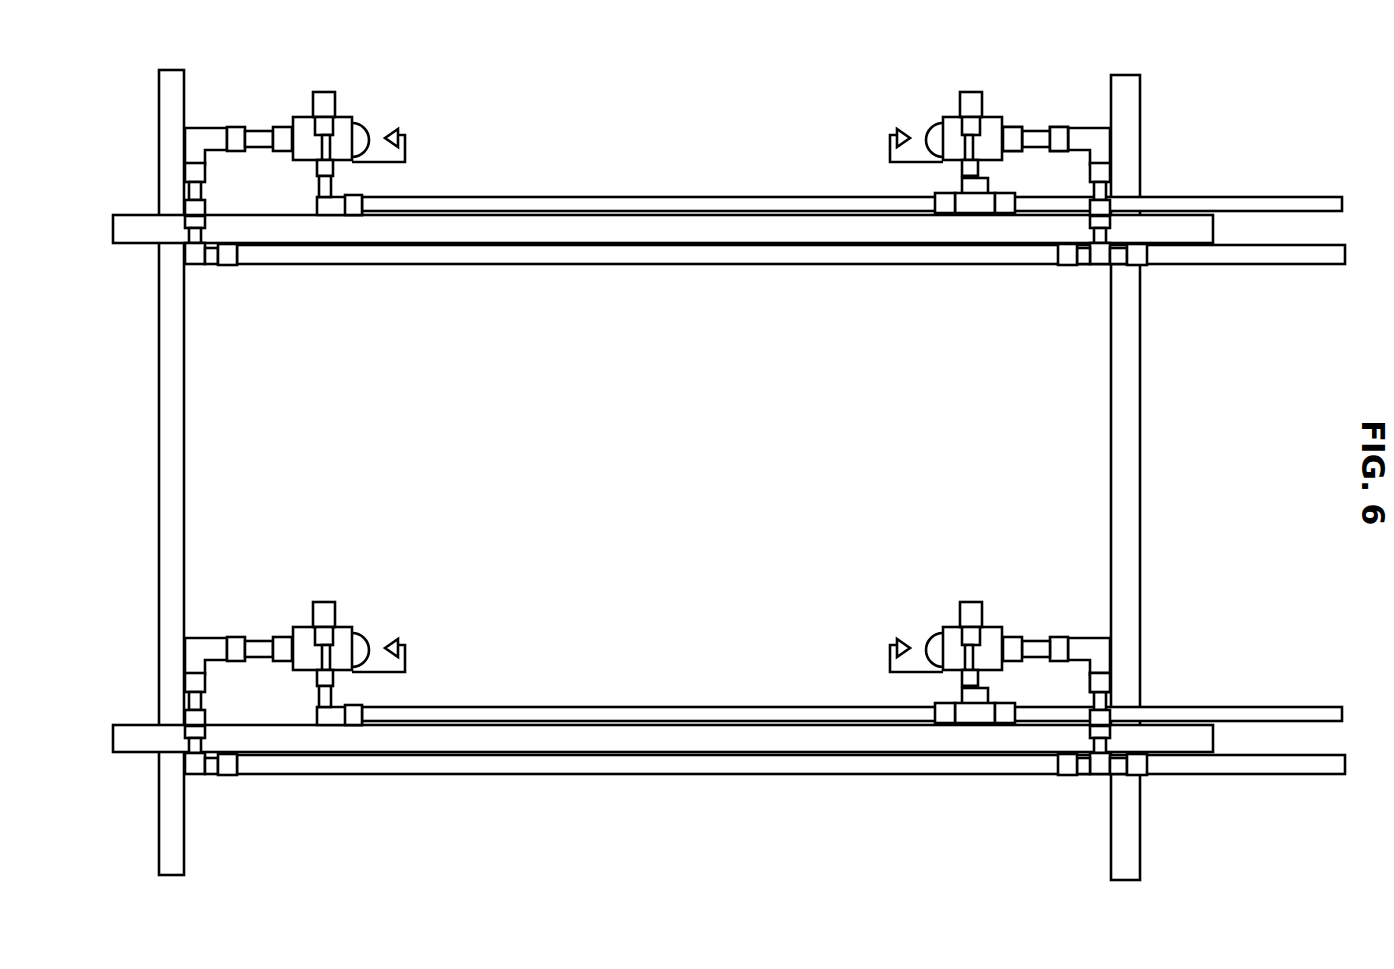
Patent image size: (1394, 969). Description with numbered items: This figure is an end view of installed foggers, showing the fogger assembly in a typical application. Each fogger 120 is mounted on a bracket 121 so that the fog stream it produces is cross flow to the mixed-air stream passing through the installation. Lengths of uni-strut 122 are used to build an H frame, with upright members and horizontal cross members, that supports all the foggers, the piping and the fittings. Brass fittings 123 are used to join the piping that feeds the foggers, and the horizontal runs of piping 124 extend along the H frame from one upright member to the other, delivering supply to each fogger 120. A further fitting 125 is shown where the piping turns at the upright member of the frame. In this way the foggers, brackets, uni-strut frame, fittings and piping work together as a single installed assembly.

The fogger 120 is at (366, 611).
The bracket 121 is at (1154, 147).
The uni-strut 122 is at (197, 394).
The brass fittings 123 is at (1047, 113).
The supply pipe 124 is at (675, 191).
The pipe coupling 125 is at (1116, 676).